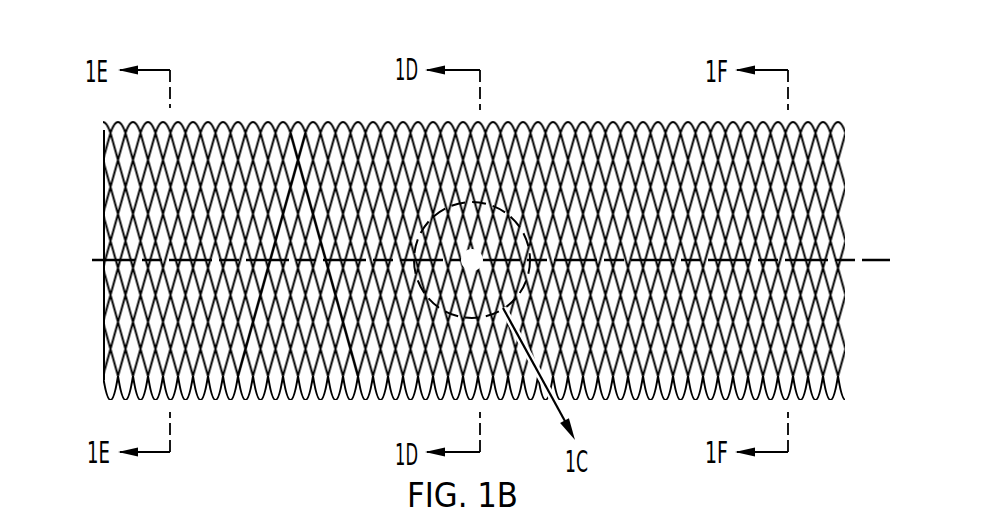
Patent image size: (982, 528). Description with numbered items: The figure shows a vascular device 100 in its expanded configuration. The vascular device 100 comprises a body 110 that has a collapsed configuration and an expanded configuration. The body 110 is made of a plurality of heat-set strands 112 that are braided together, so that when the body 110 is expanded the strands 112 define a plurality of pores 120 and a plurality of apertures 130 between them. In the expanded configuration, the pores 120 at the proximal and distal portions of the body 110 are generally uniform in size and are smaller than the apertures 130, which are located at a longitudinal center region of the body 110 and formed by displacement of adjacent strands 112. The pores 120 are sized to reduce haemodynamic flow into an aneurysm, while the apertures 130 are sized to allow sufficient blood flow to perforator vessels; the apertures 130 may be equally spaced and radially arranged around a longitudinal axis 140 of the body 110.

The vascular device 100 is at (82, 36).
The body 110 is at (321, 103).
The heat-set strands 112 is at (98, 204).
The pores 120 is at (355, 378).
The apertures 130 is at (472, 260).
The longitudinal axis 140 is at (856, 246).